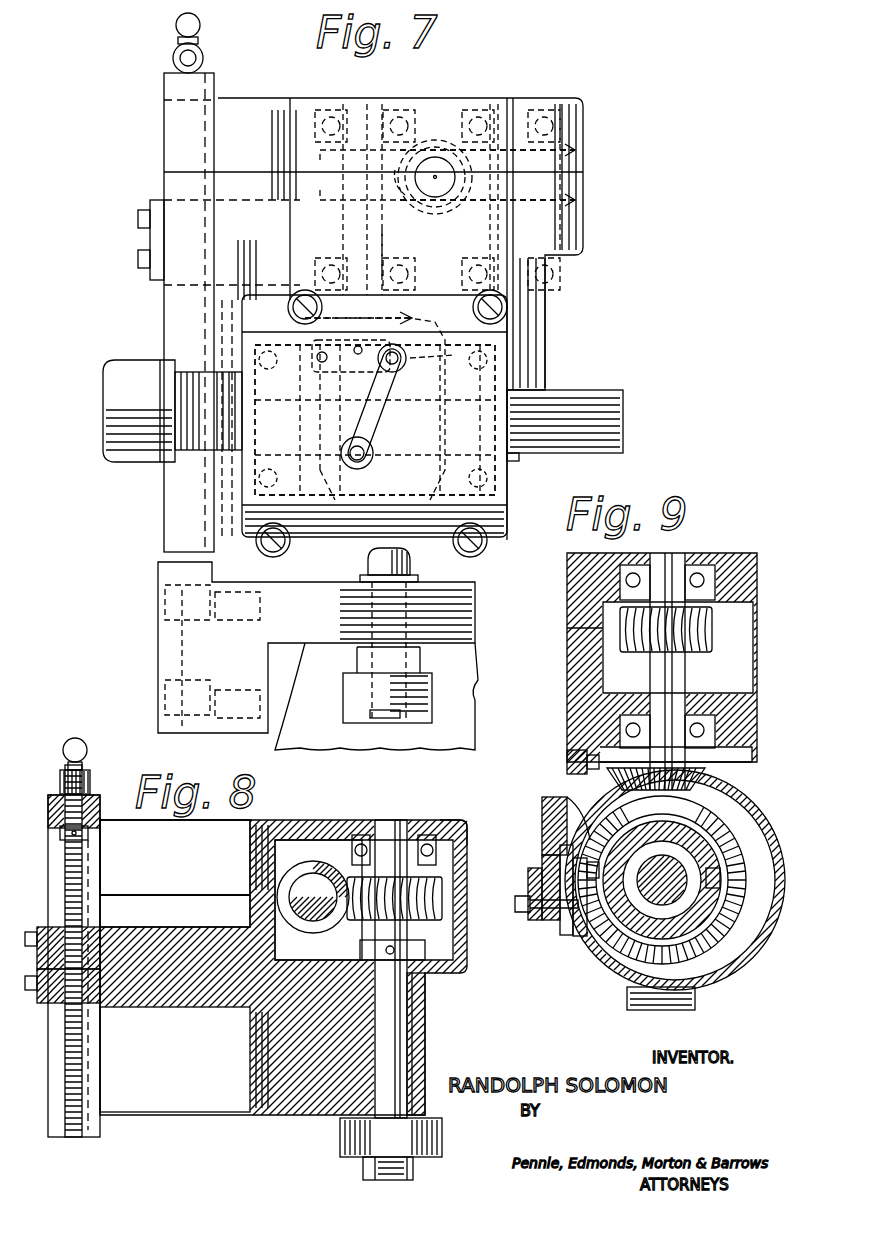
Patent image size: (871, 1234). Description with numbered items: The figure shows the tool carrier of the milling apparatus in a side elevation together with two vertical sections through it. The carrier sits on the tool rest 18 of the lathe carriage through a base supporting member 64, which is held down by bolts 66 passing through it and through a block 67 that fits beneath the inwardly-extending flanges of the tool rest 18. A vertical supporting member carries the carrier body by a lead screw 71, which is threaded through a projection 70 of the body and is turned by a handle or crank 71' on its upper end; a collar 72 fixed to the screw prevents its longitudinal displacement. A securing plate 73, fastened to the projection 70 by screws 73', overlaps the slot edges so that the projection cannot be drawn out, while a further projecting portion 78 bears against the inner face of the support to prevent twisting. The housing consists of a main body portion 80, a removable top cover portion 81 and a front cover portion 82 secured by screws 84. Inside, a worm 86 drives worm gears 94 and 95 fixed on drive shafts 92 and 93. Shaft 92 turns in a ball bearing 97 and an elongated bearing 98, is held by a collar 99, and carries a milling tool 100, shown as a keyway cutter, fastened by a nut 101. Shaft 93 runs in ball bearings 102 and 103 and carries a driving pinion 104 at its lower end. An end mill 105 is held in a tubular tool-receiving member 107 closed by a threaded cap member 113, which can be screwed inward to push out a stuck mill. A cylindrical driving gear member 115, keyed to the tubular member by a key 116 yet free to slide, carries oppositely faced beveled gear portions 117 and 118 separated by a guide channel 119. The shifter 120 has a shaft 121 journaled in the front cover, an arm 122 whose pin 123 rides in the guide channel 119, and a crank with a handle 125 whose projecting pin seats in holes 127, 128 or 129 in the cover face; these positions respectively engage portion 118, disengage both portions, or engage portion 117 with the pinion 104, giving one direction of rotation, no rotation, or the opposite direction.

In FIG. 7, the tool rest 18 is at (470, 694).
In FIG. 7, the base supporting member 64 is at (255, 668).
In FIG. 7, the bolts 66 is at (410, 556).
In FIG. 7, the block 67 is at (422, 688).
In FIG. 8, the projection 70 is at (183, 930).
In FIG. 8, the lead screw 71 is at (79, 962).
In FIG. 8, the handle or crank 71' is at (93, 766).
In FIG. 8, the collar 72 is at (60, 832).
In FIG. 7, the securing plate 73 is at (145, 225).
In FIG. 8, the securing plate 73 is at (59, 899).
In FIG. 8, the screws 73' is at (54, 977).
In FIG. 8, the projecting portion 78 is at (175, 857).
In FIG. 7, the main body portion 80 is at (583, 213).
In FIG. 8, the main body portion 80 is at (458, 968).
In FIG. 7, the top cover portion 81 is at (583, 135).
In FIG. 8, the top cover portion 81 is at (462, 836).
In FIG. 9, the front cover portion 82 is at (614, 980).
In FIG. 7, the screws 84 is at (507, 320).
In FIG. 9, the screws 84 is at (565, 762).
In FIG. 7, the worm 86 is at (427, 205).
In FIG. 8, the worm 86 is at (330, 840).
In FIG. 7, the drive shaft 92 is at (490, 228).
In FIG. 8, the drive shaft 92 is at (392, 820).
In FIG. 7, the drive shaft 93 is at (384, 250).
In FIG. 9, the drive shaft 93 is at (686, 668).
In FIG. 7, the worm gear 94 is at (583, 172).
In FIG. 8, the worm gear 94 is at (442, 900).
In FIG. 7, the worm gear 95 is at (407, 196).
In FIG. 9, the worm gear 95 is at (705, 622).
In FIG. 8, the ball bearing 97 is at (428, 835).
In FIG. 8, the elongated bearing 98 is at (418, 1044).
In FIG. 8, the collar 99 is at (425, 950).
In FIG. 8, the milling tool 100 is at (442, 1140).
In FIG. 8, the nut 101 is at (413, 1168).
In FIG. 9, the ball bearing 102 is at (700, 575).
In FIG. 9, the ball bearing 103 is at (715, 732).
In FIG. 7, the driving pinion 104 is at (430, 308).
In FIG. 9, the driving pinion 104 is at (700, 772).
In FIG. 7, the end mill 105 is at (623, 427).
In FIG. 9, the end mill 105 is at (648, 850).
In FIG. 7, the tubular tool-receiving member 107 is at (195, 440).
In FIG. 9, the tubular tool-receiving member 107 is at (700, 990).
In FIG. 7, the threaded cap member 113 is at (112, 445).
In FIG. 7, the cylindrical driving gear member 115 is at (365, 535).
In FIG. 9, the cylindrical driving gear member 115 is at (738, 950).
In FIG. 9, the key 116 is at (700, 850).
In FIG. 7, the beveled gear portion 117 is at (294, 482).
In FIG. 7, the beveled gear portion 118 is at (497, 490).
In FIG. 7, the guide channel 119 is at (359, 470).
In FIG. 7, the shifter 120 is at (378, 413).
In FIG. 9, the shifter 120 is at (540, 877).
In FIG. 9, the shaft 121 is at (553, 922).
In FIG. 9, the arm 122 is at (570, 940).
In FIG. 9, the pin 123 is at (542, 855).
In FIG. 7, the handle 125 is at (398, 364).
In FIG. 7, the hole 127 is at (317, 356).
In FIG. 7, the hole 128 is at (357, 346).
In FIG. 7, the hole 129 is at (446, 352).